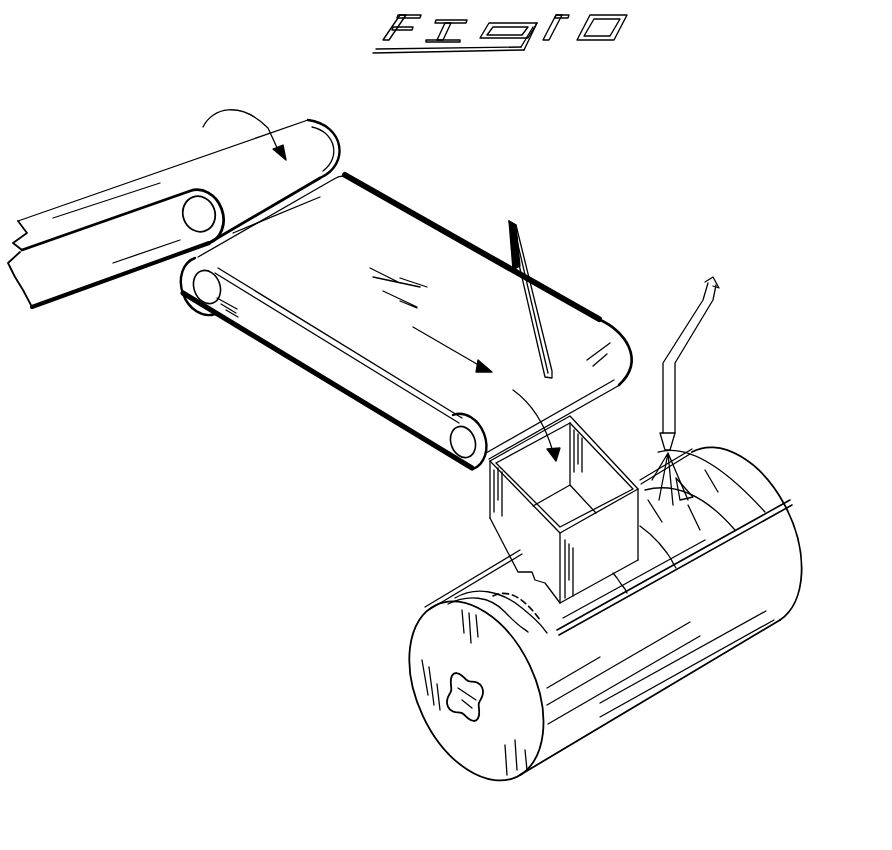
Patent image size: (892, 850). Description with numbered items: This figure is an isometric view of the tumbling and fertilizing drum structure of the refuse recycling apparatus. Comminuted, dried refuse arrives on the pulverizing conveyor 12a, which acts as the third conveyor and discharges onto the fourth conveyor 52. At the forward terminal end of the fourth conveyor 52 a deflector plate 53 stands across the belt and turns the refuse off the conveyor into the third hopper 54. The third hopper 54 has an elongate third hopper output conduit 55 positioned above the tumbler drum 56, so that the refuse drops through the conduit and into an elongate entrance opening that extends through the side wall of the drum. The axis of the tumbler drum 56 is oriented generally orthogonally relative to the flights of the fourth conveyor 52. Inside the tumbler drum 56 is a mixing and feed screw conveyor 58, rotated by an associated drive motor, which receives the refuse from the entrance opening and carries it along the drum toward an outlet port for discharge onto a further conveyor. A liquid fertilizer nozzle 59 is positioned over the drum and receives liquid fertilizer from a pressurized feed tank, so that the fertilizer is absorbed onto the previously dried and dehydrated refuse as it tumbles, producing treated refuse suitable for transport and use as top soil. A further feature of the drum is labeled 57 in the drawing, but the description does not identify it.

The pulverizing conveyor 12a is at (133, 184).
The fourth conveyor 52 is at (454, 224).
The deflector plate 53 is at (528, 277).
The third hopper 54 is at (598, 480).
The third hopper output conduit 55 is at (613, 563).
The tumbler drum 56 is at (418, 640).
The grooved drum surface 57 is at (720, 487).
The mixing and feed screw conveyor 58 is at (574, 642).
The liquid fertilizer nozzle 59 is at (677, 437).